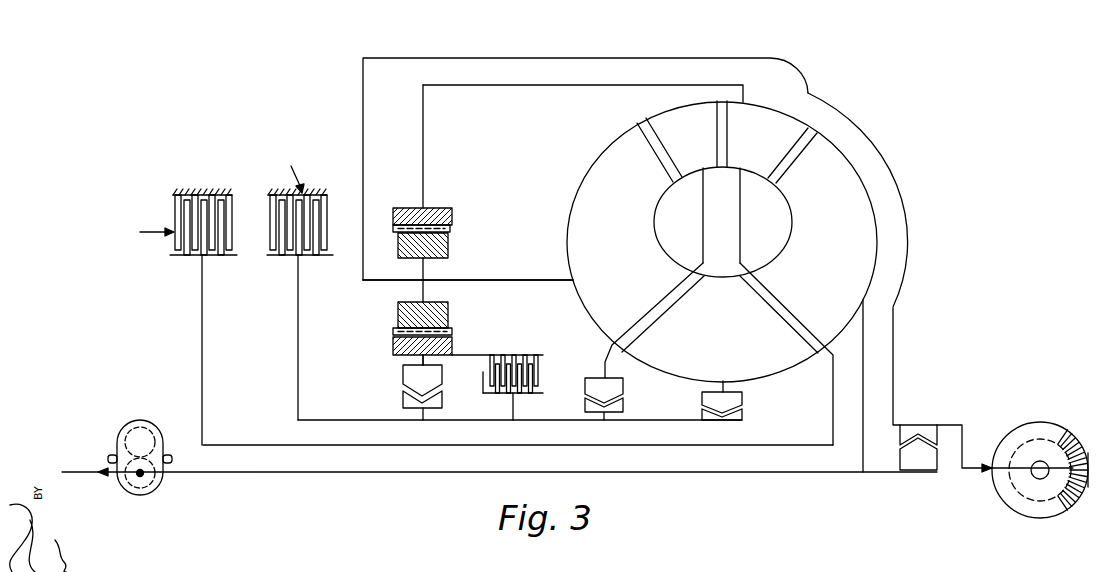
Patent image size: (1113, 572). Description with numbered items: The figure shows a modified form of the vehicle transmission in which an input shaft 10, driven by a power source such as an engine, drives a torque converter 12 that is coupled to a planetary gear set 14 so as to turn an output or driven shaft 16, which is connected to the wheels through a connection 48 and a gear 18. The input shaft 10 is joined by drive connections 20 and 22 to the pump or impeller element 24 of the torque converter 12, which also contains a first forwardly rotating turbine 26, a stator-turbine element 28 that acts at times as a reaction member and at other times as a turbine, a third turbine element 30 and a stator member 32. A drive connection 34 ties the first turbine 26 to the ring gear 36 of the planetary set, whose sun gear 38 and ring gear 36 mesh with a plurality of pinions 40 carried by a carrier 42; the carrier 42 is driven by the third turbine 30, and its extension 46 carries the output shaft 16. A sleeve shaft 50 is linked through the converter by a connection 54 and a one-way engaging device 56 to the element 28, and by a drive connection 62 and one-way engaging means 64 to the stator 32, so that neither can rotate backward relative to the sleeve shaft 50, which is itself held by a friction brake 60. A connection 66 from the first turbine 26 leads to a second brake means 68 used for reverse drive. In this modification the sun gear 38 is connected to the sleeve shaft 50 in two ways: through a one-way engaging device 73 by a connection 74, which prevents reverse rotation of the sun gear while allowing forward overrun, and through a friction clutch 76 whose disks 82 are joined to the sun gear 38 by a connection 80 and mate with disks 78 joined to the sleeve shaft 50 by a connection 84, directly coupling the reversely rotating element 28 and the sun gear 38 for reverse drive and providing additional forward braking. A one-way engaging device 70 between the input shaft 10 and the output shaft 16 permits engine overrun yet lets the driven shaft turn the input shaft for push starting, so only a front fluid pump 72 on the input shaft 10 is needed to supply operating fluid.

The input shaft 10 is at (101, 469).
The torque converter 12 is at (860, 175).
The planetary gear set 14 is at (438, 205).
The output or driven shaft 16 is at (430, 58).
The gear 18 is at (1049, 444).
The drive connection 20 is at (281, 474).
The drive connection 22 is at (867, 371).
The pump or impeller element 24 is at (855, 281).
The first turbine 26 is at (768, 120).
The stator-turbine element 28 is at (674, 123).
The third turbine element 30 is at (623, 149).
The stator member 32 is at (644, 350).
The drive connection 34 is at (468, 87).
The ring gear 36 is at (452, 216).
The sun gear 38 is at (395, 343).
The pinions 40 is at (441, 258).
The carrier 42 is at (548, 279).
The extension of the carrier 46 is at (394, 282).
The connection 48 is at (976, 467).
The sleeve shaft 50 is at (298, 421).
The connection 54 is at (703, 210).
The one-way engaging device 56 is at (624, 404).
The friction brake 60 is at (327, 215).
The drive connection 62 is at (733, 386).
The one-way engaging means 64 is at (743, 398).
The connection 66 is at (742, 222).
The second brake means 68 is at (176, 215).
The one-way engaging device 70 is at (898, 457).
The front fluid pump 72 is at (136, 483).
The one-way engaging device 73 is at (402, 386).
The connection 74 is at (403, 365).
The friction clutch 76 is at (515, 353).
The disks 78 is at (487, 376).
The connection 80 is at (463, 354).
The disks 82 is at (541, 372).
The connection 84 is at (518, 405).